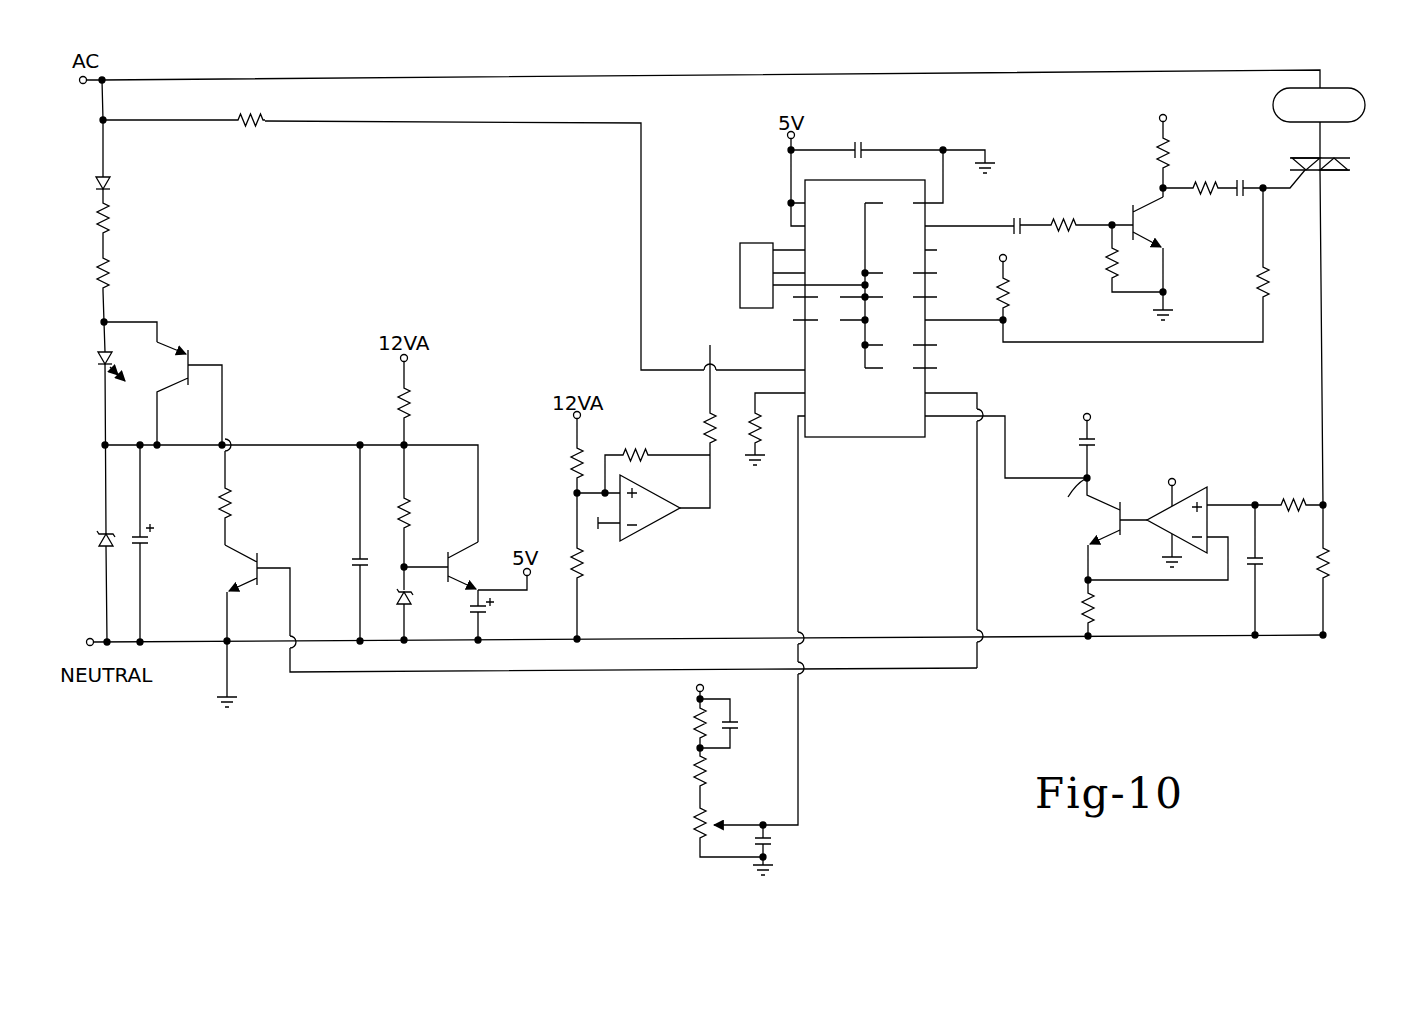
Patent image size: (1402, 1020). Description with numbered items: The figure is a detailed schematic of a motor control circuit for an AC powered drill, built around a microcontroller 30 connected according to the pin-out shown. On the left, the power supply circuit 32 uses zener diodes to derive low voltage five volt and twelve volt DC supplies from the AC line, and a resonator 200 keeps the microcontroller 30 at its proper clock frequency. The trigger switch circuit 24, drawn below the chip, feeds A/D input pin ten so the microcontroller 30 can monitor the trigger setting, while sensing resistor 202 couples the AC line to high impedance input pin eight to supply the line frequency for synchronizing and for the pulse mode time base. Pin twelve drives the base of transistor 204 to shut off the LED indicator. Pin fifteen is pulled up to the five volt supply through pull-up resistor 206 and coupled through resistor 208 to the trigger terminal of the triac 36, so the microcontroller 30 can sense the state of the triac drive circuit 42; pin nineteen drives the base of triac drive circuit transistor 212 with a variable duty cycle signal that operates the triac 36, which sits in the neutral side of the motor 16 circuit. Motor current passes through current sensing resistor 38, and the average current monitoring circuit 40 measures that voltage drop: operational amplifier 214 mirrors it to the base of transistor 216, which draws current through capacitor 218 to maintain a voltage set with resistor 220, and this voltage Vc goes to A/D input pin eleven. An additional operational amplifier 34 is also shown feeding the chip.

The motor 16 is at (1275, 118).
The trigger switch circuit 24 is at (660, 750).
The microcontroller 30 is at (906, 437).
The power supply circuit 32 is at (262, 336).
The operational amplifier 34 is at (672, 535).
The triac 36 is at (1335, 182).
The current sensing resistor 38 is at (1330, 565).
The average current monitoring circuit 40 is at (1172, 513).
The triac driver circuit 42 is at (1148, 215).
The resonator 200 is at (740, 290).
The sensing resistor 202 is at (250, 125).
The transistor 204 is at (237, 548).
The pull-up resistor 206 is at (1008, 285).
The resistor 208 is at (1258, 272).
The triac drive circuit transistor 212 is at (1130, 210).
The operational amplifier 214 is at (1210, 495).
The transistor 216 is at (1125, 505).
The capacitor 218 is at (1084, 440).
The resistor 220 is at (1083, 603).